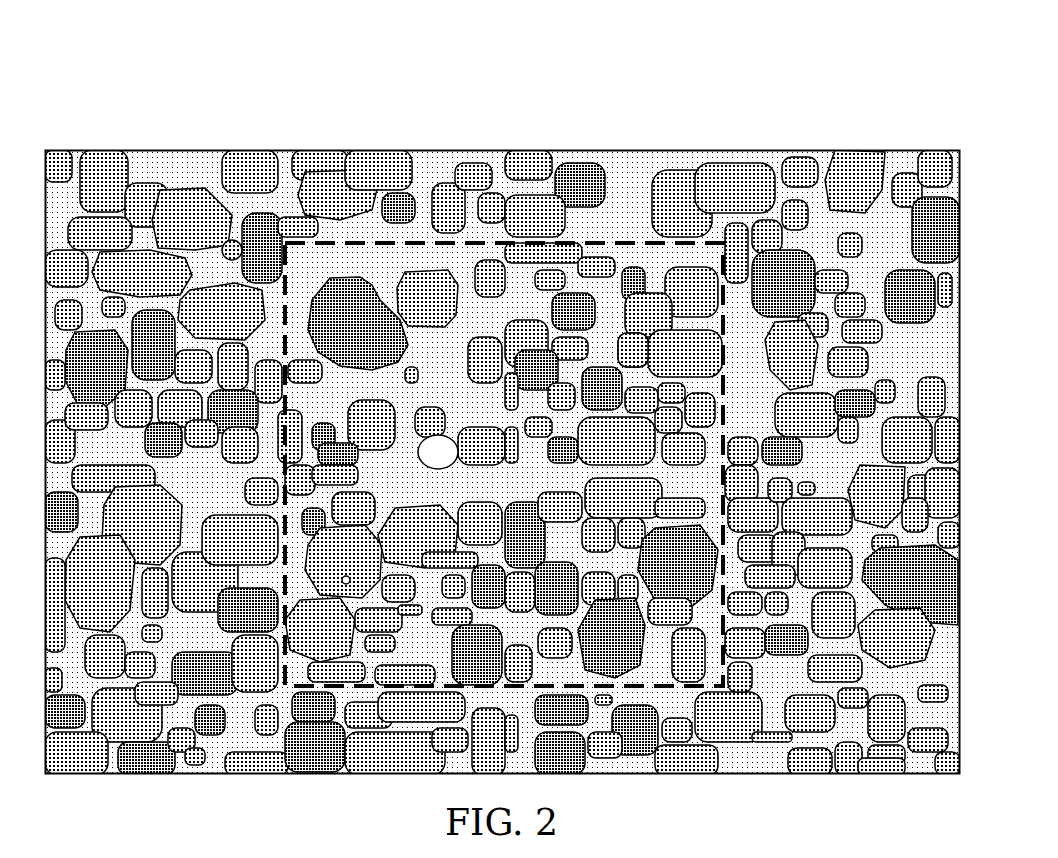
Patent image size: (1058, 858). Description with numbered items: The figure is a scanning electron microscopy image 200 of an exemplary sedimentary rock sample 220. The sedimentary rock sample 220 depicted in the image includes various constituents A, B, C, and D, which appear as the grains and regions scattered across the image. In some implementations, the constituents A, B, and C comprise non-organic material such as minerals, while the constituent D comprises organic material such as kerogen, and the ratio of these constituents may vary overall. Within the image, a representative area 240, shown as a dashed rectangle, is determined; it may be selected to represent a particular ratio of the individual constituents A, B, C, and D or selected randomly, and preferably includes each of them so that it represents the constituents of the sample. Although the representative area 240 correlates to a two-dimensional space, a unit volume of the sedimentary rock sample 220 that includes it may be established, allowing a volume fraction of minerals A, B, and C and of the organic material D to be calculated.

The scanning electron microscopy image 200 is at (373, 76).
The sedimentary rock sample 220 is at (817, 149).
The representative area 240 is at (350, 241).
The constituent A is at (606, 323).
The constituent B is at (427, 298).
The constituent C is at (443, 446).
The constituent D is at (603, 349).